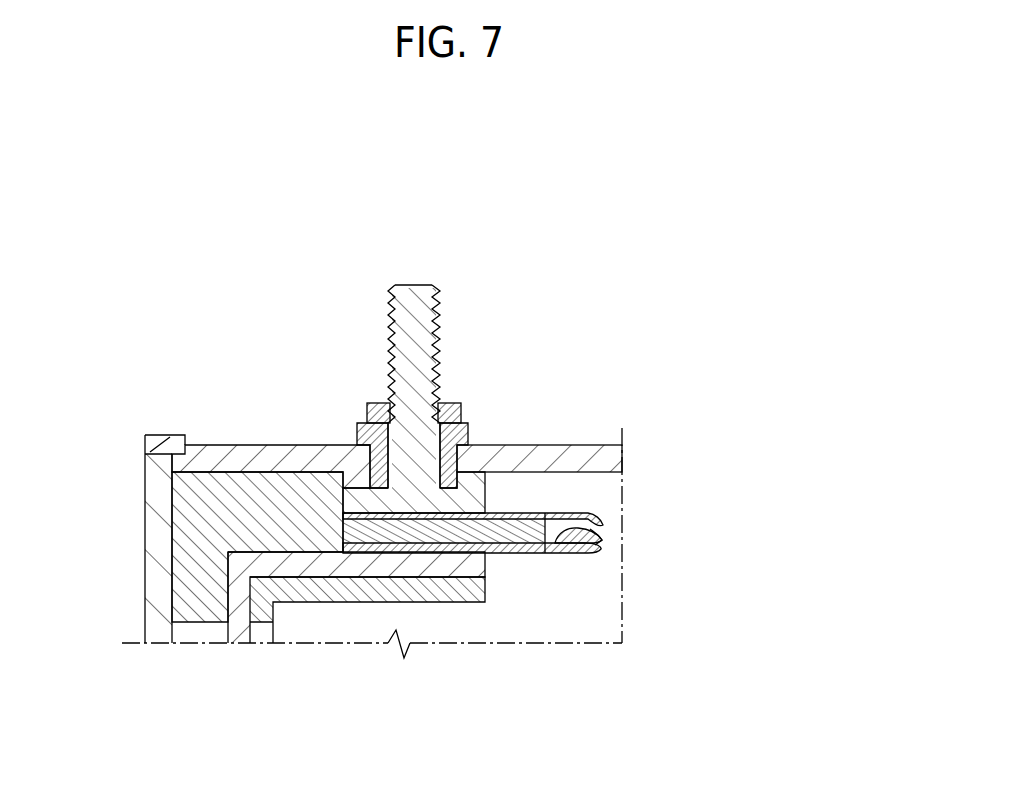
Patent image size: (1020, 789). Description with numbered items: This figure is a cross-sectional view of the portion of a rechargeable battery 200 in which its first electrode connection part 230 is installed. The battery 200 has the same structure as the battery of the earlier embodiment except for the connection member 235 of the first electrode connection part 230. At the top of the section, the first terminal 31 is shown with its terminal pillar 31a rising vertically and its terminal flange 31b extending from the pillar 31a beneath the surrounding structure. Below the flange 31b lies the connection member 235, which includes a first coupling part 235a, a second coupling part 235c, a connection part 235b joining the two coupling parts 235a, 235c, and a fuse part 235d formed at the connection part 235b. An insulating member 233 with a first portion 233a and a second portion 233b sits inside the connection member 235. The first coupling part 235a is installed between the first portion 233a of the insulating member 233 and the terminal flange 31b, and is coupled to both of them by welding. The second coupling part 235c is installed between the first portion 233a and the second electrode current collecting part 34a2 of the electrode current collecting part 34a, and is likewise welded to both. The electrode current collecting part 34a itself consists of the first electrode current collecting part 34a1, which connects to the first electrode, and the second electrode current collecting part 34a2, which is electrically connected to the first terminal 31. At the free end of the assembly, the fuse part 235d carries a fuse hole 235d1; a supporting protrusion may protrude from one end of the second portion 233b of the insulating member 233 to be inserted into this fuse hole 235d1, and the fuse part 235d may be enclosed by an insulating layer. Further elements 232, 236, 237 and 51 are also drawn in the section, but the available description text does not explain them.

The rechargeable battery 200 is at (246, 207).
The first electrode connection part 230 is at (228, 454).
The terminal plate 232 is at (368, 480).
The upper nut flange 236 is at (375, 405).
The insulating sleeve 237 is at (372, 437).
The first terminal 31 is at (449, 399).
The terminal pillar 31a is at (423, 326).
The terminal flange 31b is at (467, 502).
The cap plate 51 is at (598, 456).
The insulating member 233 is at (444, 640).
The first portion 233a is at (439, 533).
The second portion 233b is at (523, 532).
The connection member 235 is at (557, 598).
The first coupling part 235a is at (562, 513).
The connection part 235b is at (602, 534).
The second coupling part 235c is at (570, 553).
The fuse part 235d is at (603, 541).
The fuse hole 235d1 is at (553, 548).
The electrode current collecting part 34a is at (331, 660).
The first electrode current collecting part 34a1 is at (240, 598).
The second electrode current collecting part 34a2 is at (338, 567).